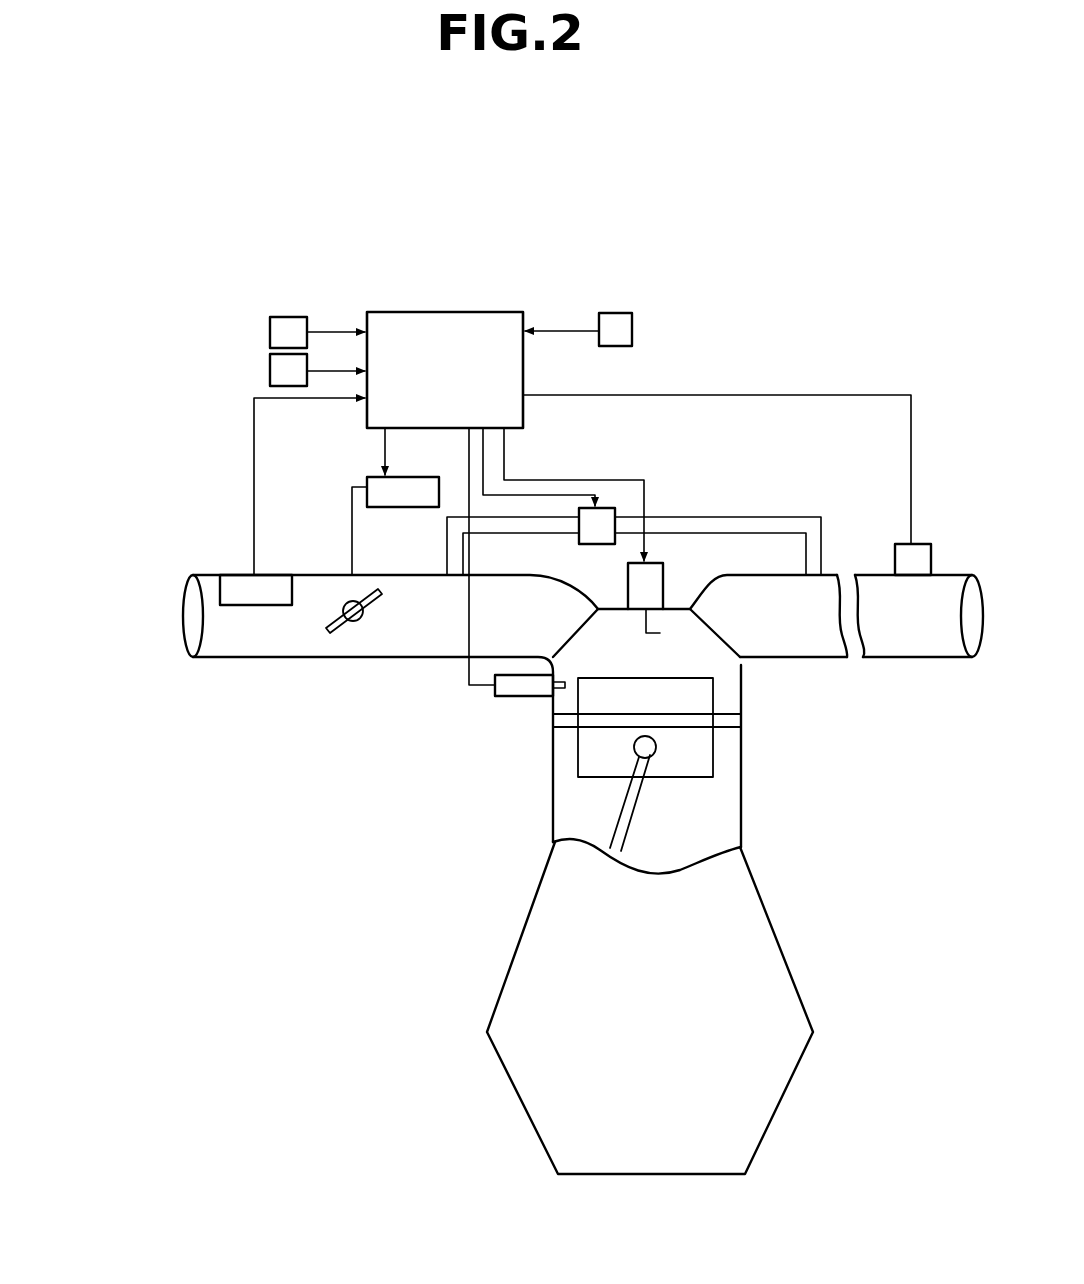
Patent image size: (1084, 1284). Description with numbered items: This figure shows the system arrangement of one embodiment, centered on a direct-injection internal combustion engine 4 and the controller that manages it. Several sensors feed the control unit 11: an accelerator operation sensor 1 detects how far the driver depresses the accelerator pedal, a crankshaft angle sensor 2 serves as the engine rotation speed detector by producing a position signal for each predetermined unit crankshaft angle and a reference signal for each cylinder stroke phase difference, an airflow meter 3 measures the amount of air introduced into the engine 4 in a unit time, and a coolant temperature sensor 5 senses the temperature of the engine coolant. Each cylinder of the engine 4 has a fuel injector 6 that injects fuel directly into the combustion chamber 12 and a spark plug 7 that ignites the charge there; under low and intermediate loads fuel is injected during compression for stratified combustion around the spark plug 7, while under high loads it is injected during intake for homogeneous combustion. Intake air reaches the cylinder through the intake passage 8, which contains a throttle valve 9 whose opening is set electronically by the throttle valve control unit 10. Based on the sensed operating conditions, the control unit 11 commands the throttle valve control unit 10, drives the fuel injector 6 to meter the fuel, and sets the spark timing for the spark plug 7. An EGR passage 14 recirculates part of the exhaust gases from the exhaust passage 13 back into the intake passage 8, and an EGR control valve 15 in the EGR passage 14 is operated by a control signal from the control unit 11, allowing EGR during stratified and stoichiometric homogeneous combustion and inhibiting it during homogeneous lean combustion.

The accelerator operation sensor 1 is at (270, 318).
The crankshaft angle sensor 2 is at (270, 370).
The airflow meter 3 is at (275, 575).
The engine 4 is at (755, 810).
The coolant temperature sensor 5 is at (632, 329).
The fuel injector 6 is at (523, 697).
The spark plug 7 is at (663, 591).
The intake passage 8 is at (327, 575).
The throttle valve 9 is at (356, 621).
The throttle valve control unit 10 is at (400, 507).
The control unit 11 is at (448, 312).
The combustion chamber 12 is at (720, 693).
The exhaust passage 13 is at (903, 657).
The EGR passage 14 is at (738, 516).
The EGR control valve 15 is at (605, 508).